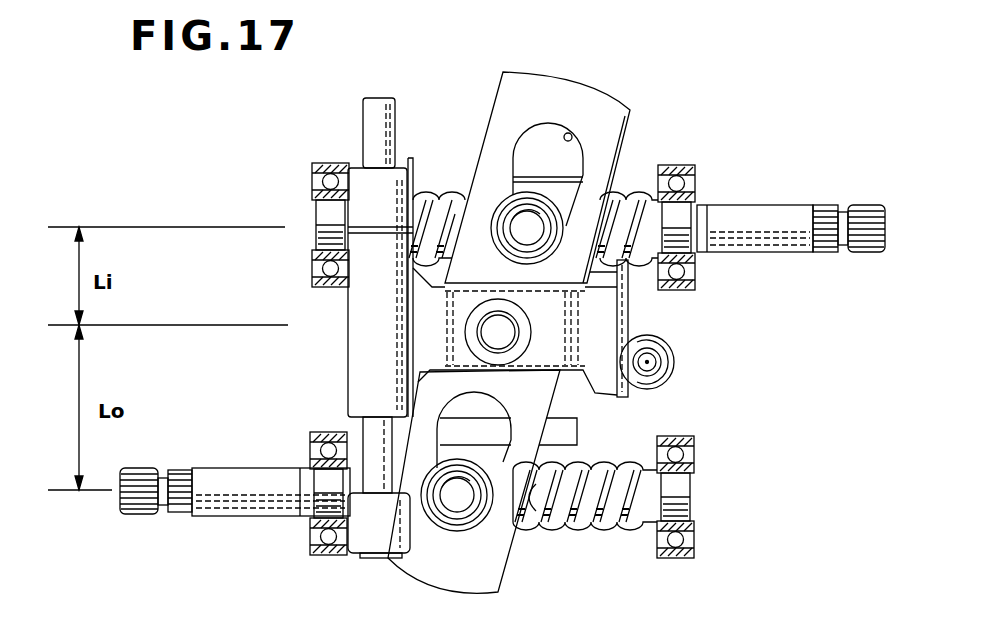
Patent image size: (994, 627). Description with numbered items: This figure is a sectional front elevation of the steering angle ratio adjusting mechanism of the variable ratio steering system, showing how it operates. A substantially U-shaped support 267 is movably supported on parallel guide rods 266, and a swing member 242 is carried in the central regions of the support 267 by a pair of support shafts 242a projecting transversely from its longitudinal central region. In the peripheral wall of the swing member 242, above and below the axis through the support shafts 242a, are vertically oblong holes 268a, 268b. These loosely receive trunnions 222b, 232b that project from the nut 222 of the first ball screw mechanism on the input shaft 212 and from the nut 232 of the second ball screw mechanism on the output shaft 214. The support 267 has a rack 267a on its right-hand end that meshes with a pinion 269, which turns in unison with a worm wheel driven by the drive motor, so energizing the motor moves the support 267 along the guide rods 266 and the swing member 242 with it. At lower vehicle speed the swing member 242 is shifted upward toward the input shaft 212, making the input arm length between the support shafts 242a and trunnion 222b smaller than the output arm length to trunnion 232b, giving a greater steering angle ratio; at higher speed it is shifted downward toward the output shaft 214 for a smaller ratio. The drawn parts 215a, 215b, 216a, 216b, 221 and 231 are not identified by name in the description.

The input shaft 212 is at (783, 210).
The output shaft 214 is at (217, 500).
The bearing 215a is at (310, 162).
The bearing 215b is at (697, 173).
The bearing 216a is at (313, 557).
The bearing 216b is at (693, 553).
The input worm 221 is at (623, 247).
The nut 222 is at (530, 173).
The trunnion 222b is at (492, 212).
The output worm 231 is at (627, 530).
The nut 232 is at (453, 443).
The trunnion 232b is at (457, 498).
The swing member 242 is at (503, 85).
The support shafts 242a is at (500, 335).
The guide rods 266 is at (367, 128).
The support 267 is at (360, 353).
The rack 267a is at (630, 313).
The oblong hole 268a is at (572, 135).
The oblong hole 268b is at (537, 520).
The pinion 269 is at (674, 362).